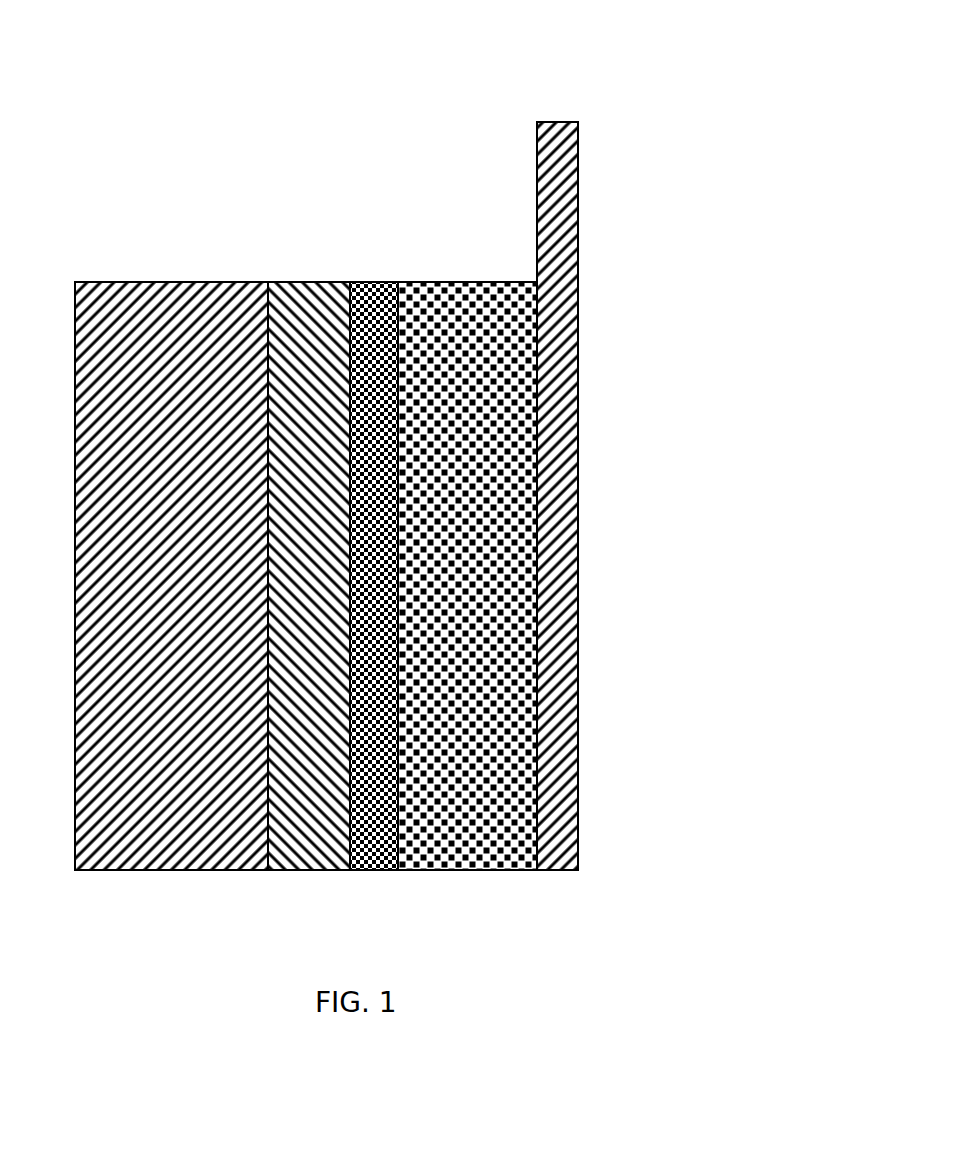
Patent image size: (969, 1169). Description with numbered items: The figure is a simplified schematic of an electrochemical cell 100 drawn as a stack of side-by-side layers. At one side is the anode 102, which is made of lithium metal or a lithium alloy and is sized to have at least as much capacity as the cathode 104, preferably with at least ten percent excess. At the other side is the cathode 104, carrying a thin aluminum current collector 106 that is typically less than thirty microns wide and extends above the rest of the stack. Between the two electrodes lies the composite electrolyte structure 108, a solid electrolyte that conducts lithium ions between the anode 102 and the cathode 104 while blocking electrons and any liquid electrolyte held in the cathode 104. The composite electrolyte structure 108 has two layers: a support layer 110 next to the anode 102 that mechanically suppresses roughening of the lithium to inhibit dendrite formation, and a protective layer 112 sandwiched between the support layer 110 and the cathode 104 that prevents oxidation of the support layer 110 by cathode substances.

The electrochemical cell 100 is at (383, 490).
The anode 102 is at (207, 282).
The cathode 104 is at (488, 870).
The aluminum current collector 106 is at (578, 185).
The composite electrolyte structure 108 is at (397, 572).
The support layer 110 is at (295, 870).
The protective layer 112 is at (375, 870).